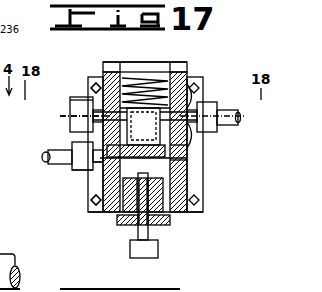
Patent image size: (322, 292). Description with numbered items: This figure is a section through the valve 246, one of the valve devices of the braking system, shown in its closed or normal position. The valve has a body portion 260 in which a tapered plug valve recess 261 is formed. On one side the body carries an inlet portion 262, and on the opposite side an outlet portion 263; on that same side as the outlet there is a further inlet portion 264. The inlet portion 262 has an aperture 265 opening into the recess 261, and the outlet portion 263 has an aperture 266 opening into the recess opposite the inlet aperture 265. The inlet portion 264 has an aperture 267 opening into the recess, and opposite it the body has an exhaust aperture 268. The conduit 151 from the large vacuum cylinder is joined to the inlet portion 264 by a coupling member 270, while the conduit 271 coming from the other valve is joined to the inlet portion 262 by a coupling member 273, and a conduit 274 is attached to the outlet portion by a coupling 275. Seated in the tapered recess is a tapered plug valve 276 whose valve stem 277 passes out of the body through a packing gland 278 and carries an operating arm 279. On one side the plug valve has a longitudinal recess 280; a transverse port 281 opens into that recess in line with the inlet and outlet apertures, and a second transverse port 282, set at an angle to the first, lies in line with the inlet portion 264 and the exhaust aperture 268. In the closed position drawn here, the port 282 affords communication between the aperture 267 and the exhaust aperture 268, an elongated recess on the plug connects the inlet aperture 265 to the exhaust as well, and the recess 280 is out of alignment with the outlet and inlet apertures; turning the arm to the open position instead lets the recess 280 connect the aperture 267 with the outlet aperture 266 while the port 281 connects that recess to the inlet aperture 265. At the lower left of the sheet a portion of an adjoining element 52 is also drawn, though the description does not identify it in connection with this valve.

The valve 246 is at (170, 61).
The body portion 260 is at (203, 197).
The tapered plug valve recess 261 is at (90, 197).
The inlet portion 262 is at (197, 91).
The outlet portion 263 is at (91, 89).
The inlet portion 264 is at (93, 155).
The aperture 265 is at (192, 150).
The aperture 266 is at (72, 130).
The aperture 267 is at (97, 180).
The exhaust aperture 268 is at (193, 165).
The coupling member 270 is at (78, 176).
The conduit 271 is at (241, 122).
The coupling member 273 is at (213, 104).
The conduit 274 is at (68, 123).
The coupling 275 is at (72, 100).
The tapered plug valve 276 is at (196, 152).
The valve stem 277 is at (141, 235).
The packing gland 278 is at (170, 221).
The operating arm 279 is at (157, 251).
The longitudinal recess 280 is at (128, 130).
The transverse port 281 is at (158, 111).
The transverse port 282 is at (217, 183).
The conduit 151 is at (44, 162).
The hook element 52 is at (6, 254).